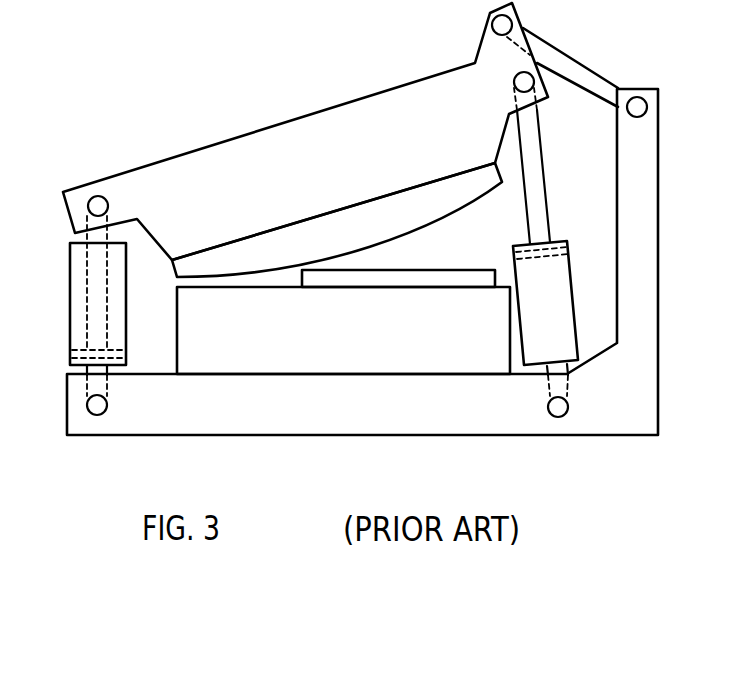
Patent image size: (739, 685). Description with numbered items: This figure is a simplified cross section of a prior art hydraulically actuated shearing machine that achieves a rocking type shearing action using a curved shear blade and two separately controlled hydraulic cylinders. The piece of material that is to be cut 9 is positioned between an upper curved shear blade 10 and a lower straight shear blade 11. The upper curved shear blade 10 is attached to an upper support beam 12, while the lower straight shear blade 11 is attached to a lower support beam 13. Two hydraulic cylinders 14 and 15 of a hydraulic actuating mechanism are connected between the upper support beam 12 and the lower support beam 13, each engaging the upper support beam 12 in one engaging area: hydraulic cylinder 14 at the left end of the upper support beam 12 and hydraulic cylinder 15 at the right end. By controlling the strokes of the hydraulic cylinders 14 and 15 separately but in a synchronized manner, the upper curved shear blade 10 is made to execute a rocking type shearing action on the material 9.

The piece of material to be cut 9 is at (403, 287).
The upper curved shear blade 10 is at (327, 220).
The lower straight shear blade 11 is at (305, 363).
The upper support beam 12 is at (304, 120).
The lower support beam 13 is at (363, 427).
The hydraulic cylinder 14 is at (70, 297).
The hydraulic cylinder 15 is at (565, 277).